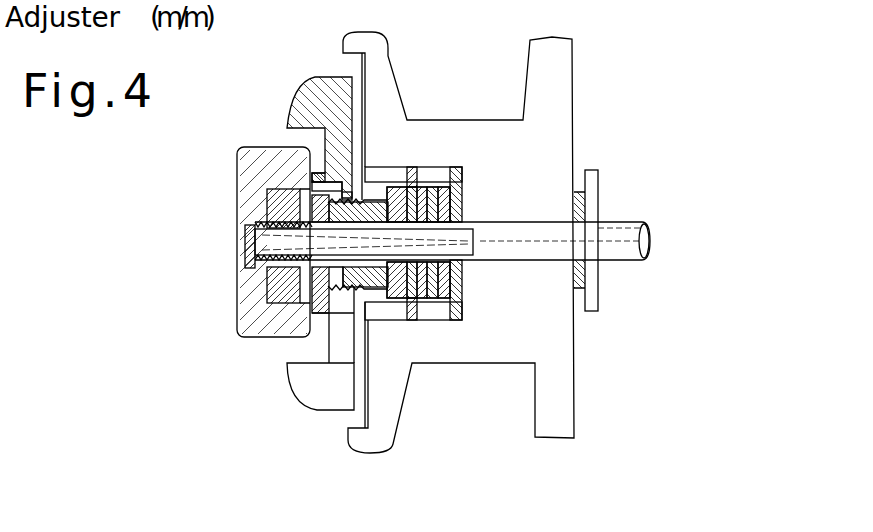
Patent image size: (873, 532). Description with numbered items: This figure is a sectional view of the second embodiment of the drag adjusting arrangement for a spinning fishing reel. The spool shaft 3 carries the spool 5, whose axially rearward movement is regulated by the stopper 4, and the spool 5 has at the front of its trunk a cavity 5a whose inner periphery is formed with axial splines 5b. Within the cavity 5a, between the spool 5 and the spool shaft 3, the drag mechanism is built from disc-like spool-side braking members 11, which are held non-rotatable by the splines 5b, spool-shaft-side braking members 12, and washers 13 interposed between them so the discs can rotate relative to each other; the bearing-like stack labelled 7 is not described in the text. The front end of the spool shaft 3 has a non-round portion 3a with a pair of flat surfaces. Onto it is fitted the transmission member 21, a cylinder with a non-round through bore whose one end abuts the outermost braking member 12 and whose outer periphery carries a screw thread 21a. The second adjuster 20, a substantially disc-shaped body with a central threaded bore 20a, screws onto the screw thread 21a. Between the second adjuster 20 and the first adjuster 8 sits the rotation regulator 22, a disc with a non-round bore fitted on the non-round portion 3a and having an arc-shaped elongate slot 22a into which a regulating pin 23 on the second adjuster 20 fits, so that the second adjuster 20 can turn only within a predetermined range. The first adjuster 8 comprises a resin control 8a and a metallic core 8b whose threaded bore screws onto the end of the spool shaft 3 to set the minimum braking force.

The spool shaft 3 is at (548, 222).
The non-round portion 3a is at (262, 247).
The stopper 4 is at (595, 203).
The spool 5 is at (508, 120).
The cavity 5a is at (463, 193).
The splines 5b is at (427, 178).
The bearing 7 is at (437, 178).
The first adjuster 8 is at (237, 148).
The control 8a is at (242, 318).
The metallic core 8b is at (270, 287).
The spool-side braking members 11 is at (455, 320).
The spool-shaft-side braking members 12 is at (395, 320).
The washers 13 is at (405, 320).
The second adjuster 20 is at (319, 122).
The threaded bore 20a is at (377, 197).
The transmission member 21 is at (340, 215).
The screw thread 21a is at (353, 186).
The rotation regulator 22 is at (318, 200).
The elongate slot 22a is at (313, 180).
The regulating pin 23 is at (318, 172).